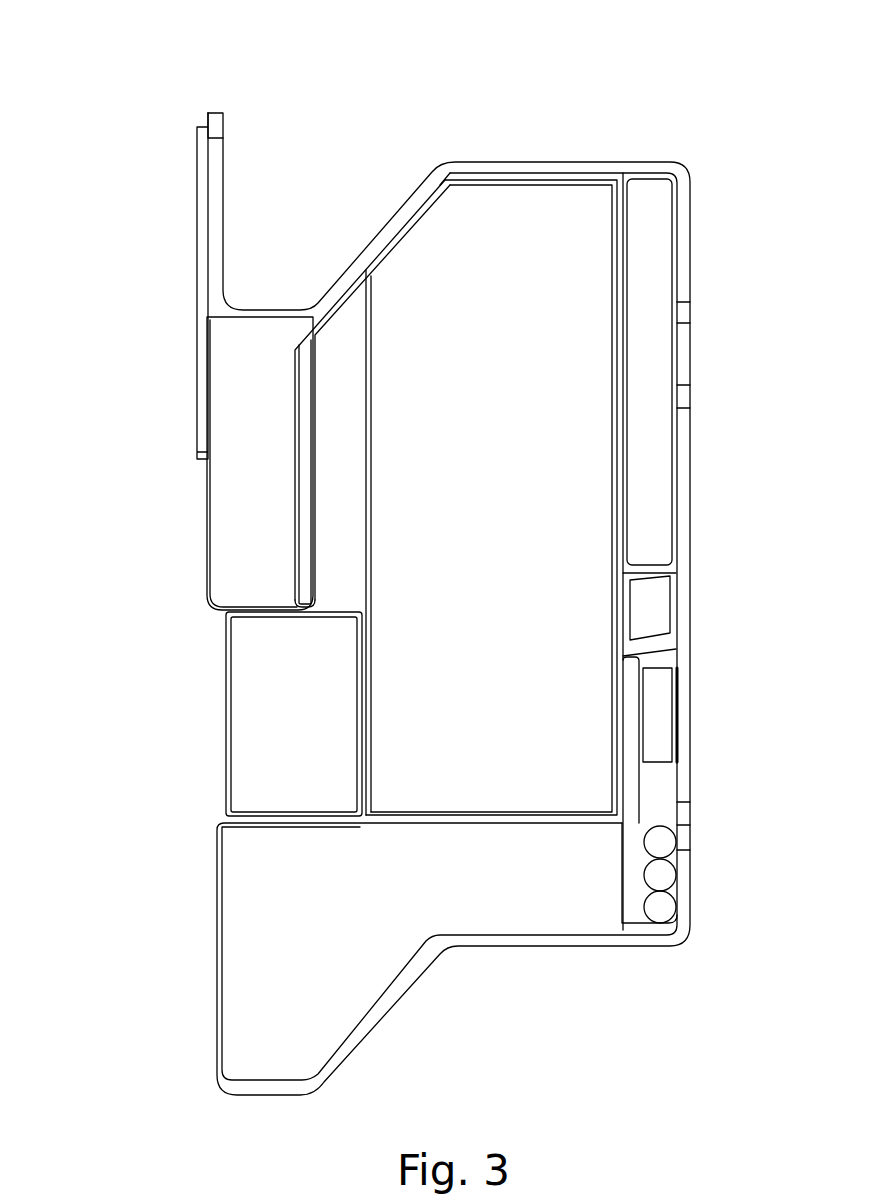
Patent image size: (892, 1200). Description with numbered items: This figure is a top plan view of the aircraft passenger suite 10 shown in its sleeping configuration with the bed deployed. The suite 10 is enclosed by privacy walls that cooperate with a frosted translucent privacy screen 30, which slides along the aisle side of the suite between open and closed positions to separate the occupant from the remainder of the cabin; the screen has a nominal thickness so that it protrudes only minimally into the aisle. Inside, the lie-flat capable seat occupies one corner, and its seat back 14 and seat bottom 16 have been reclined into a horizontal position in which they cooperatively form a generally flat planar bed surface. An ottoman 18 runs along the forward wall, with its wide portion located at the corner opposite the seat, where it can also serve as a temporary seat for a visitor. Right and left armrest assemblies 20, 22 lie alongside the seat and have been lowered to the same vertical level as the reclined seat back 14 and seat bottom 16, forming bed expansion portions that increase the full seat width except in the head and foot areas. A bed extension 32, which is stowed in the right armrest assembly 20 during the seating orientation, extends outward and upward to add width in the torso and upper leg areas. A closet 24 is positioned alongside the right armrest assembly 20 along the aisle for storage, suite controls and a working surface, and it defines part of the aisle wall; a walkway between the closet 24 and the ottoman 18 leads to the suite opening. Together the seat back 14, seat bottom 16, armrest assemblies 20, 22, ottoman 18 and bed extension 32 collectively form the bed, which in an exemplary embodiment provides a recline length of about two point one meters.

The suite 10 is at (305, 172).
The seat back 14 is at (583, 470).
The seat bottom 16 is at (555, 705).
The ottoman 18 is at (387, 885).
The right armrest assembly 20 is at (338, 466).
The left armrest assembly 22 is at (660, 282).
The closet 24 is at (258, 571).
The privacy screen 30 is at (195, 320).
The bed extension 32 is at (267, 727).